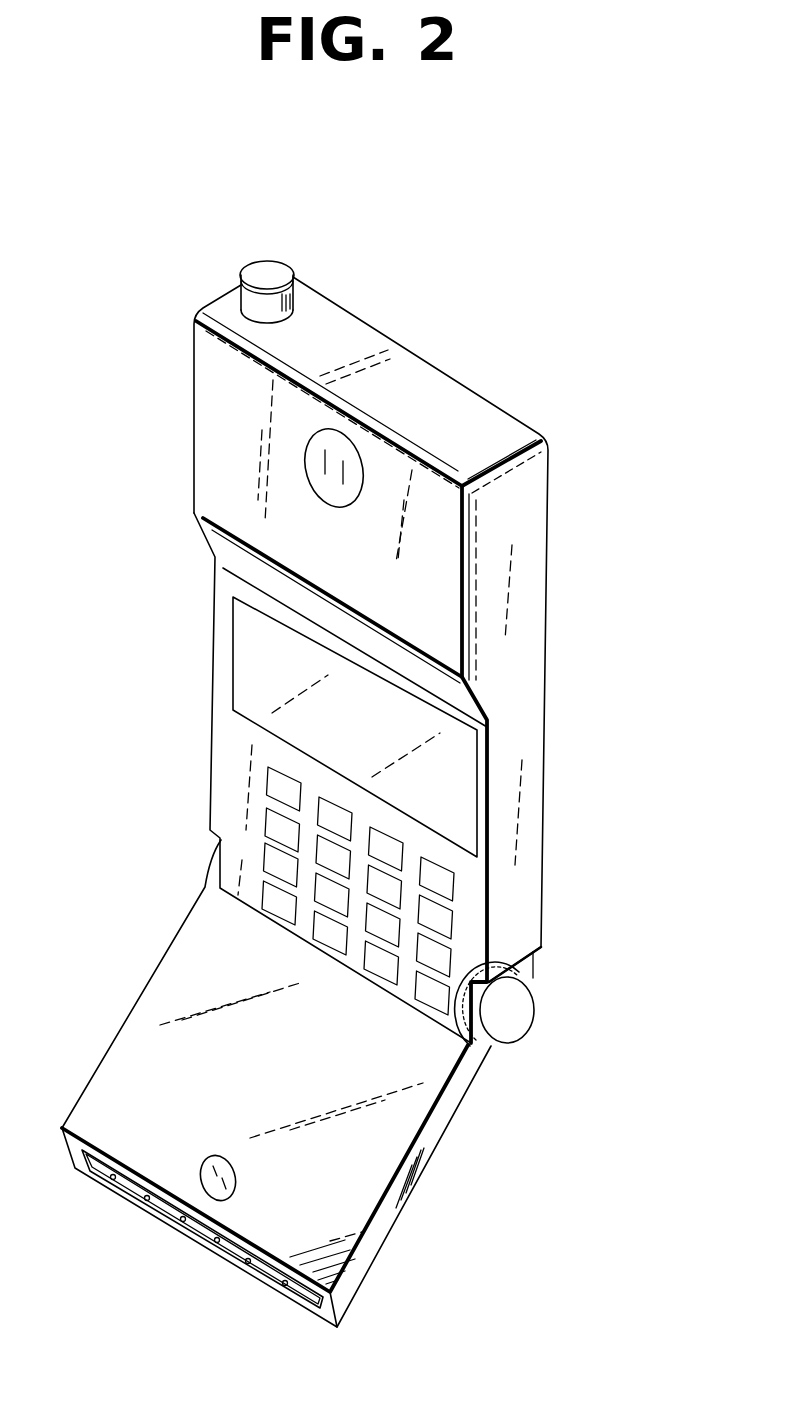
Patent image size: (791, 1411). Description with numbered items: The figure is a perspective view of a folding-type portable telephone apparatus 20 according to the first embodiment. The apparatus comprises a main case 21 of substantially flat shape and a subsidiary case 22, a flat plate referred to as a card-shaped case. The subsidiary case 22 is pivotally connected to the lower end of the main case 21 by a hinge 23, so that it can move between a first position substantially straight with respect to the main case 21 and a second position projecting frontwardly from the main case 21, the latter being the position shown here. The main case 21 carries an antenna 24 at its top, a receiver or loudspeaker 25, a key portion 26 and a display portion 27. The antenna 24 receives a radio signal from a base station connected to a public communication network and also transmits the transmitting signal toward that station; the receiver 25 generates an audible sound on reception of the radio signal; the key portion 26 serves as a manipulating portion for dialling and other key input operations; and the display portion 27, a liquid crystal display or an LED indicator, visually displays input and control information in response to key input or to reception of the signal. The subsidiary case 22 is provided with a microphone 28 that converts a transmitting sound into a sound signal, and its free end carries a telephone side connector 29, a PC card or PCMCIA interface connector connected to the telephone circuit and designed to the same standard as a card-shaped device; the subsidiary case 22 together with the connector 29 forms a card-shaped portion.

The portable telephone apparatus 20 is at (198, 761).
The main case 21 is at (510, 541).
The subsidiary case 22 is at (425, 1145).
The hinge 23 is at (500, 1020).
The antenna 24 is at (267, 277).
The receiver 25 is at (340, 453).
The key portion 26 is at (433, 922).
The display portion 27 is at (440, 760).
The microphone 28 is at (237, 1187).
The telephone side connector 29 is at (170, 1212).